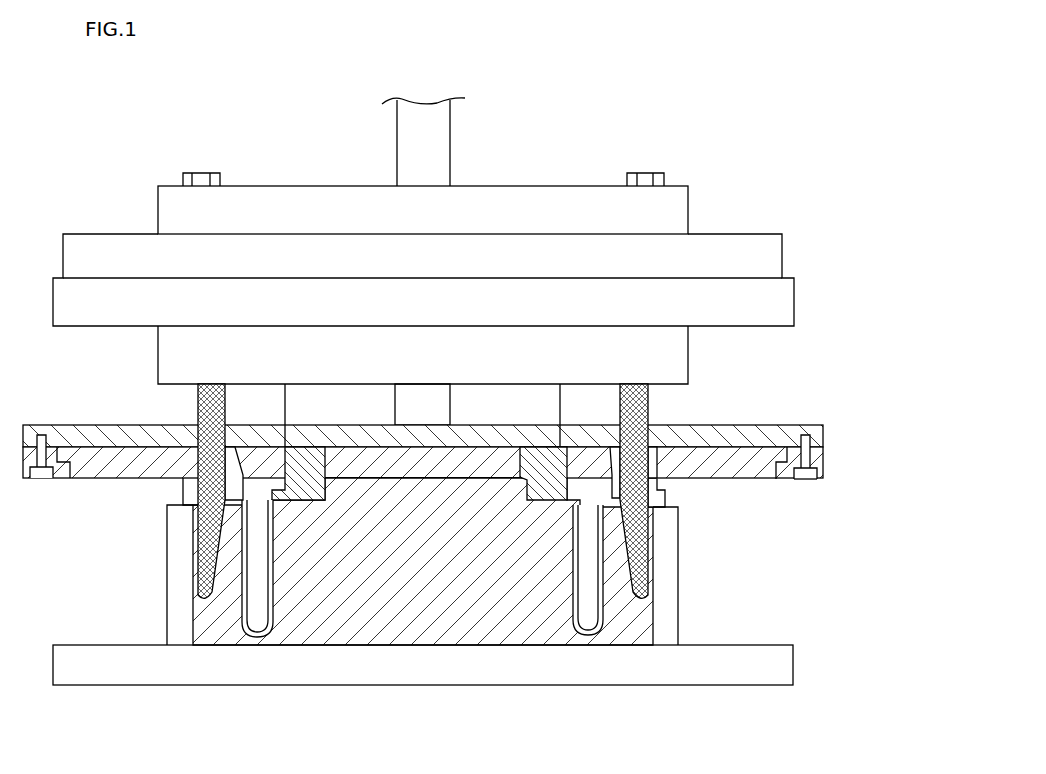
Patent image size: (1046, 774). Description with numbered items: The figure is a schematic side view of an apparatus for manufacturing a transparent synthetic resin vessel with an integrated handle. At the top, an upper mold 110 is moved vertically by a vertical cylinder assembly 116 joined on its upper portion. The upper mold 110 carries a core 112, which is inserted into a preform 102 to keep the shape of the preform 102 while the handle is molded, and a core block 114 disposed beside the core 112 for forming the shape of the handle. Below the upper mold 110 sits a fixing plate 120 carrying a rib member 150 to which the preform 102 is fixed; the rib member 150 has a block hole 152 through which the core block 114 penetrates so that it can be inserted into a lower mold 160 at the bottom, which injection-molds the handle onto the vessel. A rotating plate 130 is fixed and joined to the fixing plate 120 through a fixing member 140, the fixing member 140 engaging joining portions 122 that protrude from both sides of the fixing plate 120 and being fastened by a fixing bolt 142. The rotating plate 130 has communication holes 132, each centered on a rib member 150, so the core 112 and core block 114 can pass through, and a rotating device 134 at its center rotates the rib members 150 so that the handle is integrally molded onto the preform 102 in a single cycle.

The preform 102 is at (605, 638).
The upper mold 110 is at (782, 254).
The core 112 is at (258, 398).
The core block 114 is at (640, 384).
The vertical cylinder assembly 116 is at (688, 207).
The fixing plate 120 is at (752, 482).
The joining portion 122 is at (780, 452).
The rotating plate 130 is at (823, 433).
The communication hole 132 is at (652, 435).
The rotating device 134 is at (424, 407).
The fixing member 140 is at (823, 455).
The fastening bolt 142 is at (787, 479).
The rib member 150 is at (543, 490).
The block hole 152 is at (668, 487).
The lower mold 160 is at (793, 665).